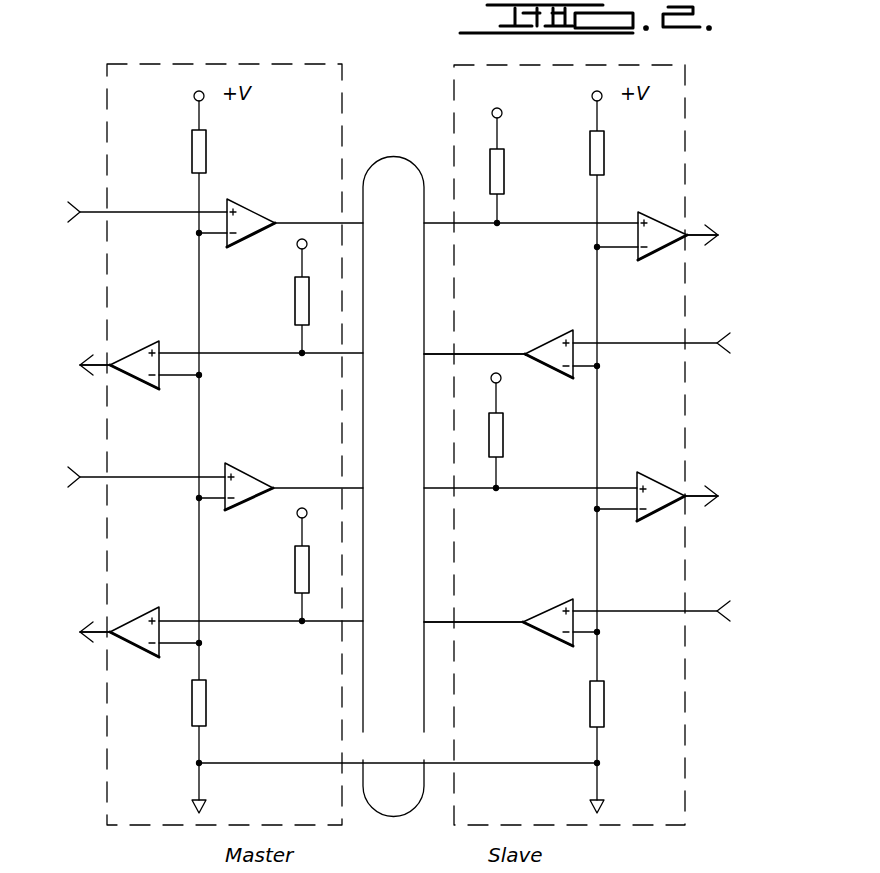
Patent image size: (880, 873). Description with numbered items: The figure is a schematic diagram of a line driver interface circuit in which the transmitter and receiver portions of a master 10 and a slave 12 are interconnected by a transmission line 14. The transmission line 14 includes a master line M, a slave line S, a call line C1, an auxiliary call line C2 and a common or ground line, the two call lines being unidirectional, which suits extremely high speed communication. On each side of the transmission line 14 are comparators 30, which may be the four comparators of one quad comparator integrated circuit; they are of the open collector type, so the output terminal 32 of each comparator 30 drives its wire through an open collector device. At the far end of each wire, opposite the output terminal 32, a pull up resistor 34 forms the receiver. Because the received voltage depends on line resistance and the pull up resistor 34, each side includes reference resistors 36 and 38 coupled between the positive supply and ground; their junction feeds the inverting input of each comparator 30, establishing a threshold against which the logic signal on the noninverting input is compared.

The master 10 is at (168, 56).
The slave 12 is at (454, 100).
The transmission line 14 is at (383, 157).
The comparator circuit 30 is at (249, 226).
The output terminal 32 is at (291, 222).
The pull up resistor 34 is at (300, 308).
The reference resistor 36 is at (199, 152).
The reference resistor 38 is at (201, 711).